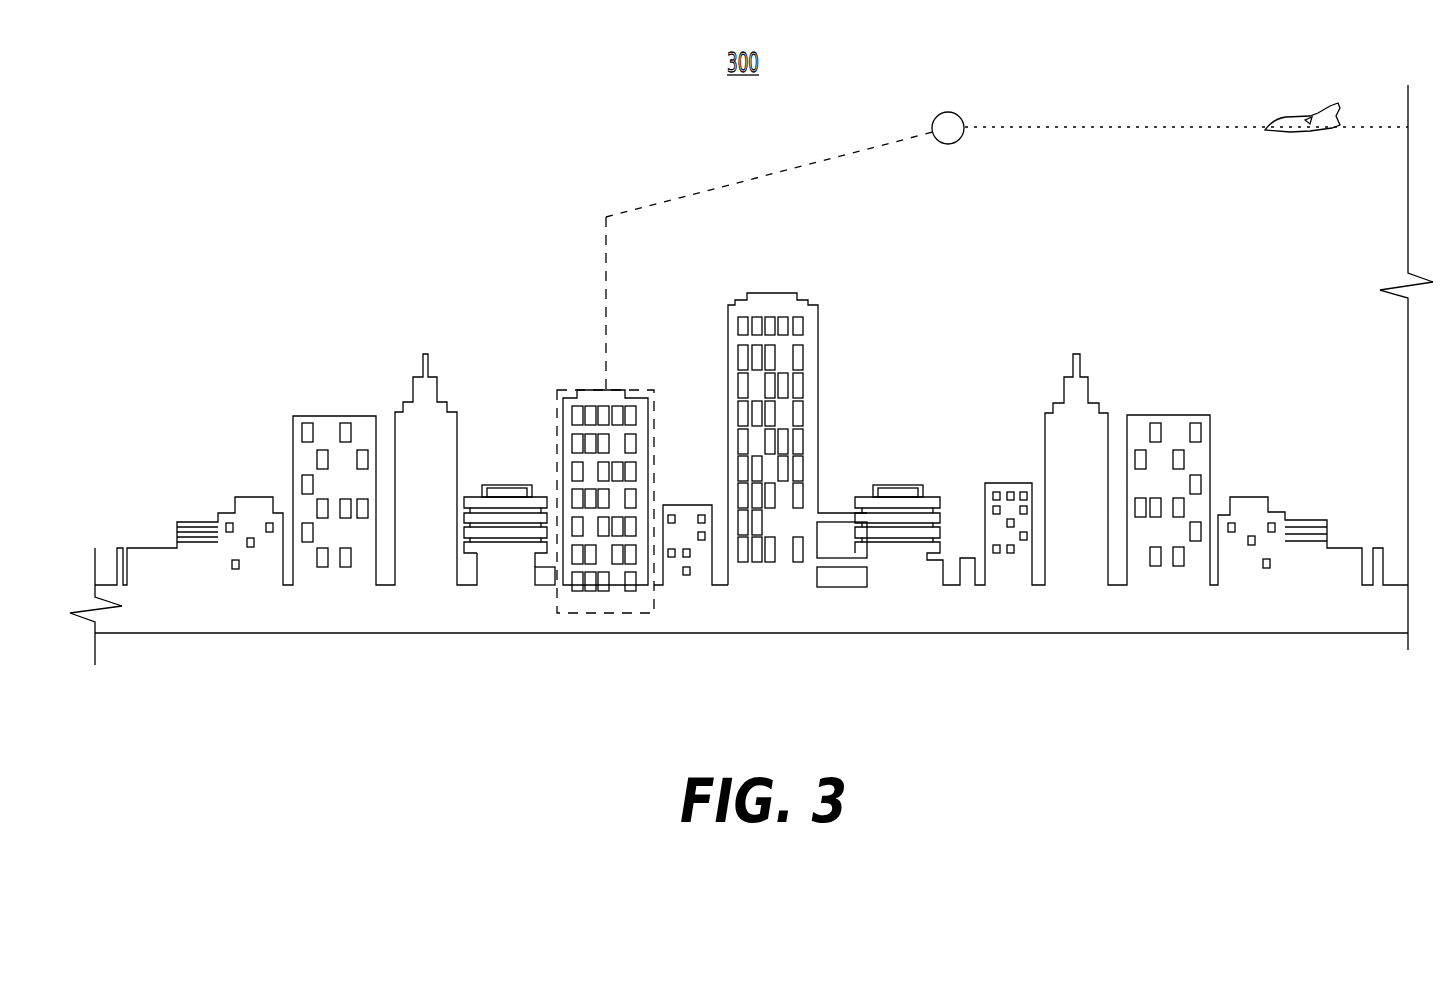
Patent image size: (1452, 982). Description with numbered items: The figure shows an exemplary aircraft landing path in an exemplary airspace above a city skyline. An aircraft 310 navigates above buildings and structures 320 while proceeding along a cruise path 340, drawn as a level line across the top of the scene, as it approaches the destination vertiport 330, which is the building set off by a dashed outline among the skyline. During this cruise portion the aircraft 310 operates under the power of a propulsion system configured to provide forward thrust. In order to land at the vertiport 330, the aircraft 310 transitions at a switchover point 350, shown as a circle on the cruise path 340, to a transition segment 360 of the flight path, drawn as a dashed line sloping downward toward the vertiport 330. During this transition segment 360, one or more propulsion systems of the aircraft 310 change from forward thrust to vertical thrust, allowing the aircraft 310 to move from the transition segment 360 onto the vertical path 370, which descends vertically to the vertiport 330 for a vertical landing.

The aircraft 310 is at (1286, 121).
The buildings and structures 320 is at (372, 352).
The destination vertiport 330 is at (563, 391).
The cruise path 340 is at (1130, 128).
The switchover point 350 is at (947, 127).
The transition segment 360 is at (680, 198).
The vertical path 370 is at (606, 330).